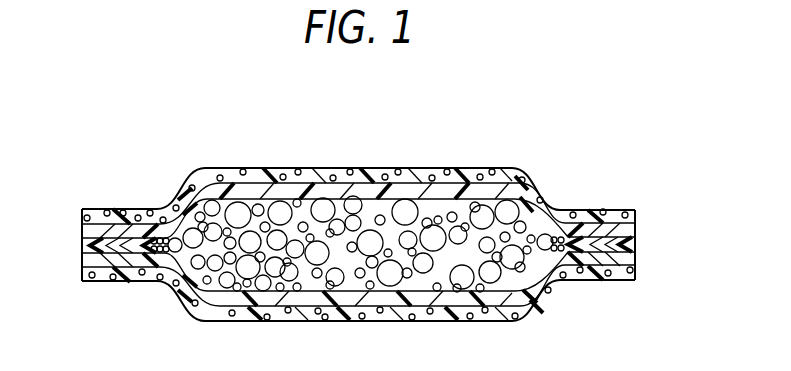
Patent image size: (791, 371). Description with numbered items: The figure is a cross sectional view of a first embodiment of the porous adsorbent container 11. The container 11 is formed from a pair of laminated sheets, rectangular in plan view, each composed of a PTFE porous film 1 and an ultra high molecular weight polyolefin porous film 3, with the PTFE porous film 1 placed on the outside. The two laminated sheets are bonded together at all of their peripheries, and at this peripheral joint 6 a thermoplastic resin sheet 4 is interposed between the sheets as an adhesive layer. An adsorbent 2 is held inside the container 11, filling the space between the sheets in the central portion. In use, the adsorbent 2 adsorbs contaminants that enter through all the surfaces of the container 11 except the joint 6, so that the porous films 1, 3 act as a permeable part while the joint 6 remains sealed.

The container 11 is at (320, 142).
The PTFE porous film 1 is at (607, 209).
The adsorbent 2 is at (410, 212).
The ultra high molecular weight polyolefin porous film 3 is at (633, 230).
The thermoplastic resin sheet 4 is at (82, 245).
The peripheral joint 6 is at (135, 208).